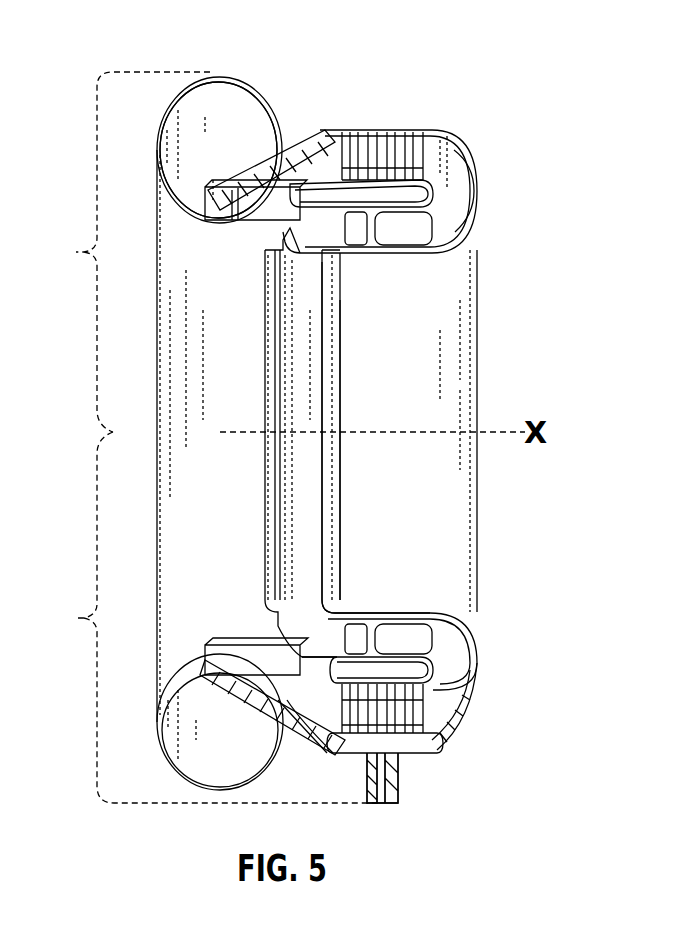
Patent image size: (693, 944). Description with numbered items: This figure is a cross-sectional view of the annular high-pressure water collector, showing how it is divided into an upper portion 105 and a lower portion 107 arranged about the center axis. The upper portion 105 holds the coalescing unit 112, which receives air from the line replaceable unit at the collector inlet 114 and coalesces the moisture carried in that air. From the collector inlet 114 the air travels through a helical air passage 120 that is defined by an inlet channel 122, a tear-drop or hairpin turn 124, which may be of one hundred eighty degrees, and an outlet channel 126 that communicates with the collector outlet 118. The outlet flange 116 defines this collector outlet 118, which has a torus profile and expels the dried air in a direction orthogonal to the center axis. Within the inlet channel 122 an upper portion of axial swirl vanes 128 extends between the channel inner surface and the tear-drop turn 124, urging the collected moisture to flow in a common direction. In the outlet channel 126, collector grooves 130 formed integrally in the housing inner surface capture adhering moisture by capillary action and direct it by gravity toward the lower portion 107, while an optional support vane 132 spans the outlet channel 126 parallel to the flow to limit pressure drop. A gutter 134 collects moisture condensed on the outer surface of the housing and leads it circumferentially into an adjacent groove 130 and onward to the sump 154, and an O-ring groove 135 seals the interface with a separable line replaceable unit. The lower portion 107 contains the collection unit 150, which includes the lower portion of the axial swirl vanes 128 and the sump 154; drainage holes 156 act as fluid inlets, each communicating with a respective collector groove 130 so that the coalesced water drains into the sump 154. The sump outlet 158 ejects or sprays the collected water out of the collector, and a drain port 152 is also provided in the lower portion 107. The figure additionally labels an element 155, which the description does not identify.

The upper portion 105 is at (76, 252).
The lower portion 107 is at (76, 618).
The coalescing unit 112 is at (578, 313).
The collector inlet 114 is at (345, 240).
The outlet flange 116 is at (245, 78).
The collector outlet 118 is at (217, 106).
The helical air passage 120 is at (452, 212).
The inlet channel 122 is at (317, 630).
The tear-drop turn 124 is at (470, 178).
The outlet channel 126 is at (280, 207).
The axial swirl vanes 128 is at (388, 637).
The collector grooves 130 is at (412, 142).
The support vane 132 is at (383, 160).
The gutter 134 is at (305, 178).
The O-ring groove 135 is at (325, 265).
The collection unit 150 is at (447, 735).
The drain port 152 is at (383, 807).
The sump 154 is at (437, 750).
The web 155 is at (338, 420).
The drainage holes 156 is at (403, 715).
The sump outlet 158 is at (403, 773).